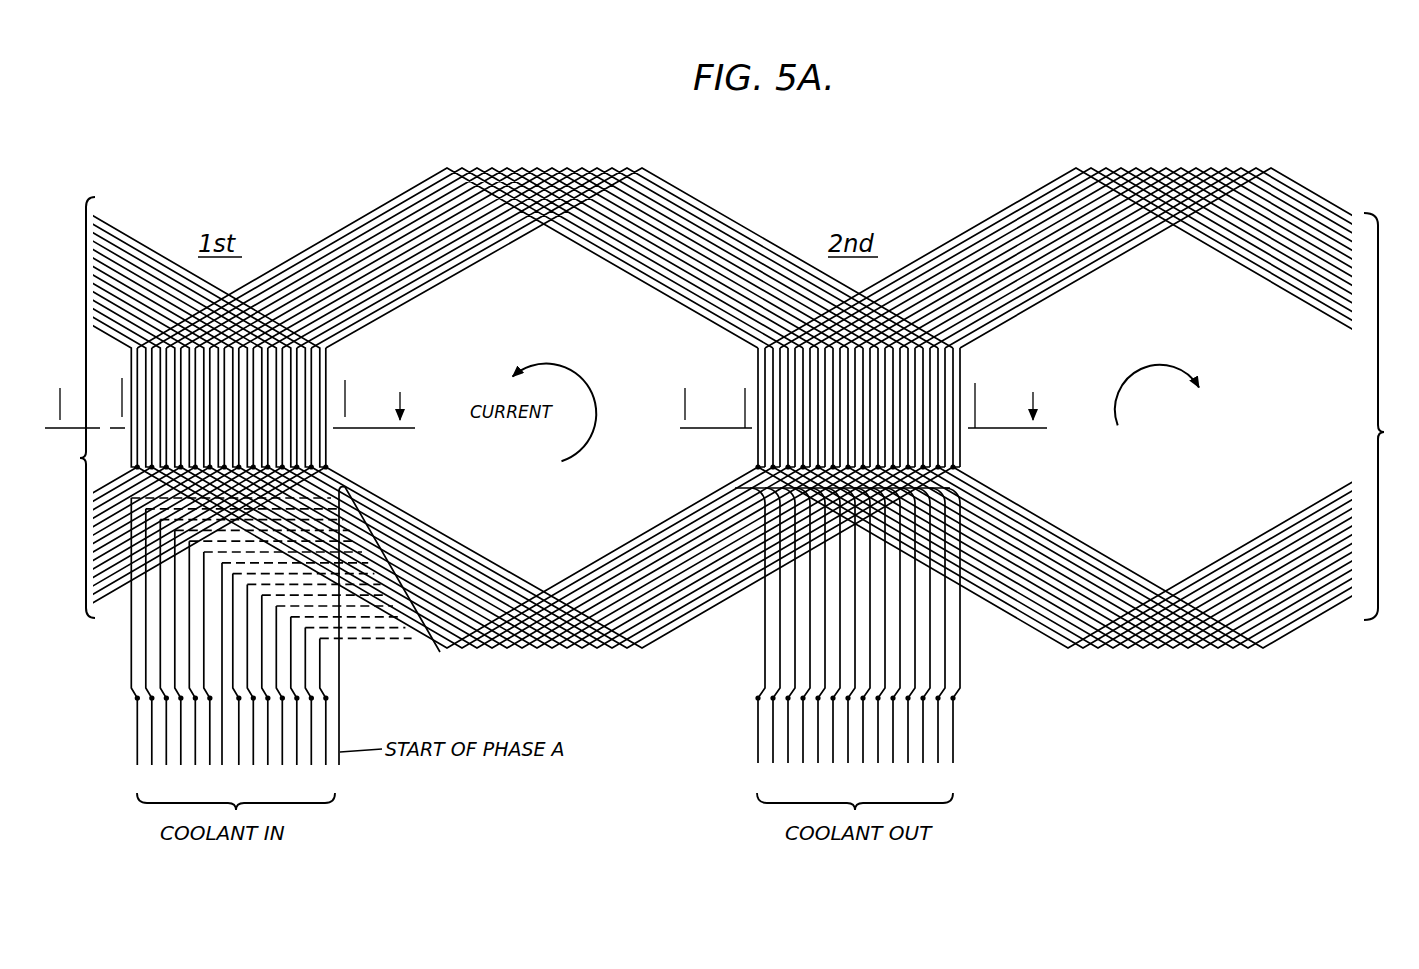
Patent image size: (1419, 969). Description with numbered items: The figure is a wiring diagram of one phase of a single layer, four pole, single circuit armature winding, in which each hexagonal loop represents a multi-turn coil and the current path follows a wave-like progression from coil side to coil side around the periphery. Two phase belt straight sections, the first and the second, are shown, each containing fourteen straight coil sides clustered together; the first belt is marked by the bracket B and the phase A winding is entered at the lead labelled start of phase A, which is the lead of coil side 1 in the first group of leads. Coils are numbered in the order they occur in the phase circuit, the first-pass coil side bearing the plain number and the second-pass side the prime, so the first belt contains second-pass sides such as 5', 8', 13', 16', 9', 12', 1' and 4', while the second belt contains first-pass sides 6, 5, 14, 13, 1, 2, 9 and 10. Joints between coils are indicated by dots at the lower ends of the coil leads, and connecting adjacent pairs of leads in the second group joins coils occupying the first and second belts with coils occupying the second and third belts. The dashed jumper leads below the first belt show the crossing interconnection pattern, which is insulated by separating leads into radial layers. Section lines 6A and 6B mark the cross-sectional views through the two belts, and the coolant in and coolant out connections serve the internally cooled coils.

The coil side 1 (first coil, first pass) 1 is at (879, 466).
The coil side 2 (second coil, first pass) 2 is at (958, 374).
The coil side 5 (fifth coil, first pass) 5 is at (1057, 408).
The coil side 6 (sixth coil, first pass) 6 is at (758, 357).
The coil side 9 (ninth coil, first pass) 9 is at (1169, 408).
The coil side 10 (tenth coil, first pass) 10 is at (940, 455).
The coil side 13 (thirteenth coil, first pass) 13 is at (1066, 408).
The coil side 14 (fourteenth coil, first pass) 14 is at (775, 441).
The second coil side of coil 1 1' is at (184, 407).
The second coil side of coil 4 4' is at (184, 407).
The second coil side of coil 5 5' is at (70, 407).
The second coil side of coil 8 8' is at (77, 407).
The second coil side of coil 9 9' is at (195, 407).
The second coil side of coil 12 12' is at (192, 407).
The second coil side of coil 13 13' is at (84, 407).
The second coil side of coil 16 16' is at (91, 407).
The section line 6A- 6A is at (227, 399).
The section line 6B- 6B is at (860, 400).
The phase A is at (1384, 416).
The bracket B (first phase belt / first group of leads) B is at (74, 407).